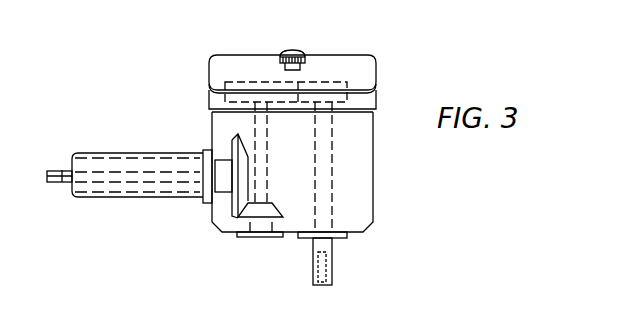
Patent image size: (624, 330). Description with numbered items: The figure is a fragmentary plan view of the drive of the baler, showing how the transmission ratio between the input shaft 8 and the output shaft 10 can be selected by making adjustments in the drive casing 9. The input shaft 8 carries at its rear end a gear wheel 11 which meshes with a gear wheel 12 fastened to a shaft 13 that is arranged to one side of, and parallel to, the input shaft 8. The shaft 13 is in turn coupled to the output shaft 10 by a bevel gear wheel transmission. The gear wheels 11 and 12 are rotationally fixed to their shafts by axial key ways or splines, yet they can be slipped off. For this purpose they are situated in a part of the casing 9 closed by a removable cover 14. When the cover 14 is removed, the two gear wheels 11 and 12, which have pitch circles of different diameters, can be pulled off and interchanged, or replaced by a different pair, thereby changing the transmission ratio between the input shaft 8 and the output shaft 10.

The input shaft 8 is at (332, 268).
The drive casing 9 is at (368, 188).
The output shaft 10 is at (54, 170).
The gear wheel 11 is at (338, 82).
The gear wheel 12 is at (240, 82).
The shaft 13 is at (267, 167).
The removable cover 14 is at (216, 77).